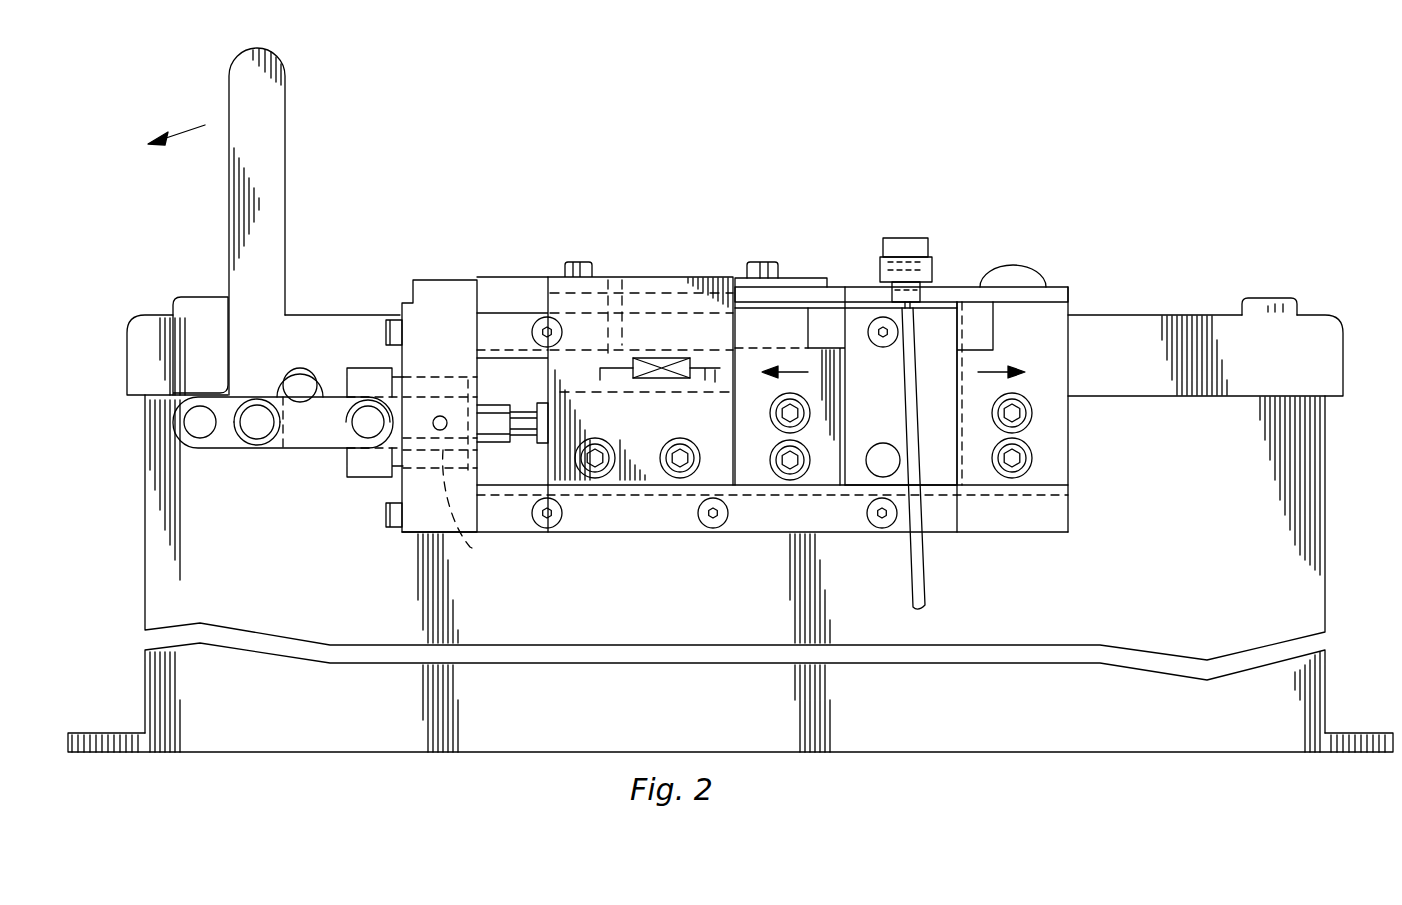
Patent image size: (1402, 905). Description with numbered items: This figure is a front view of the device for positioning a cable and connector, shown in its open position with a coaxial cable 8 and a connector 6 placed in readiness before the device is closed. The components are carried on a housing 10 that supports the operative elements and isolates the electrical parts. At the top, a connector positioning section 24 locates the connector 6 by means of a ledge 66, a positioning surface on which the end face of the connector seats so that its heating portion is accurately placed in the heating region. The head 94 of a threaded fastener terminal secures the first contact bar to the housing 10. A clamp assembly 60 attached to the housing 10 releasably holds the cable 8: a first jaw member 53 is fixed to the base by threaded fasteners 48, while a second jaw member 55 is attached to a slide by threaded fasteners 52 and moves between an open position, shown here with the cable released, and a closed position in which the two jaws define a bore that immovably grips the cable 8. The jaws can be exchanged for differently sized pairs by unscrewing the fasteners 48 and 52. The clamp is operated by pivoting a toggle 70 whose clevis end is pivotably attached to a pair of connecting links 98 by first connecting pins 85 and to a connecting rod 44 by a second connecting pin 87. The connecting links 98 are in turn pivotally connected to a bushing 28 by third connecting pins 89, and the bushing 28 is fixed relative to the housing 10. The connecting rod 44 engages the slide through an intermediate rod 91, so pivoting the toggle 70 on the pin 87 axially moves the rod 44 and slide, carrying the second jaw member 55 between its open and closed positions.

The connector 6 is at (905, 238).
The coaxial cable 8 is at (915, 552).
The housing 10 is at (1122, 314).
The connector positioning section 24 is at (1008, 306).
The bushing 28 is at (370, 370).
The connecting rod 44 is at (480, 552).
The threaded fasteners 48 is at (1020, 413).
The threaded fasteners 52 is at (787, 465).
The first jaw member 53 is at (957, 330).
The second jaw member 55 is at (847, 333).
The clamp assembly 60 is at (1097, 512).
The ledge 66 is at (920, 318).
The toggle 70 is at (258, 104).
The first connecting pins 85 is at (252, 428).
The second connecting pin 87 is at (190, 432).
The third connecting pins 89 is at (368, 440).
The intermediate rod 91 is at (487, 405).
The head 94 is at (1010, 265).
The connecting links 98 is at (308, 450).